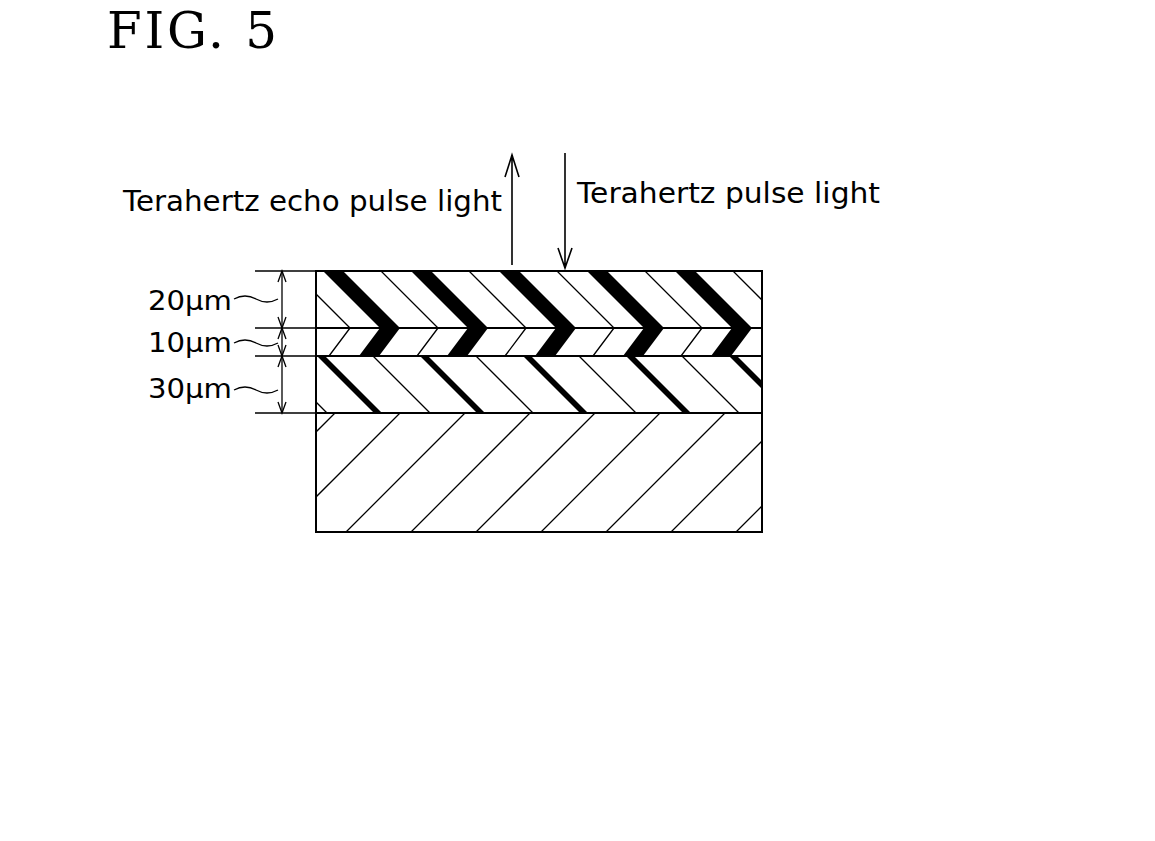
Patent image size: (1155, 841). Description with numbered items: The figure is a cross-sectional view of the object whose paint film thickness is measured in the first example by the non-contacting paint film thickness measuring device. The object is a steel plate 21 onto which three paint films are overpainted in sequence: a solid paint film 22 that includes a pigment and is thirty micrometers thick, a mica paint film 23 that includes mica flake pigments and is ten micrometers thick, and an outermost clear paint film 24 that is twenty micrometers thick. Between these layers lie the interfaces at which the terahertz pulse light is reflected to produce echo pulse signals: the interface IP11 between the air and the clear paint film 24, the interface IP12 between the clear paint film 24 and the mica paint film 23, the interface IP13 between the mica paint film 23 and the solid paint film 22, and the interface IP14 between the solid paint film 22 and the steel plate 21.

The steel plate 21 is at (738, 483).
The solid paint film 22 is at (745, 390).
The mica paint film 23 is at (748, 345).
The clear paint film 24 is at (761, 302).
The interface IP11 is at (762, 270).
The interface IP12 is at (761, 323).
The interface IP13 is at (761, 353).
The interface IP14 is at (761, 410).